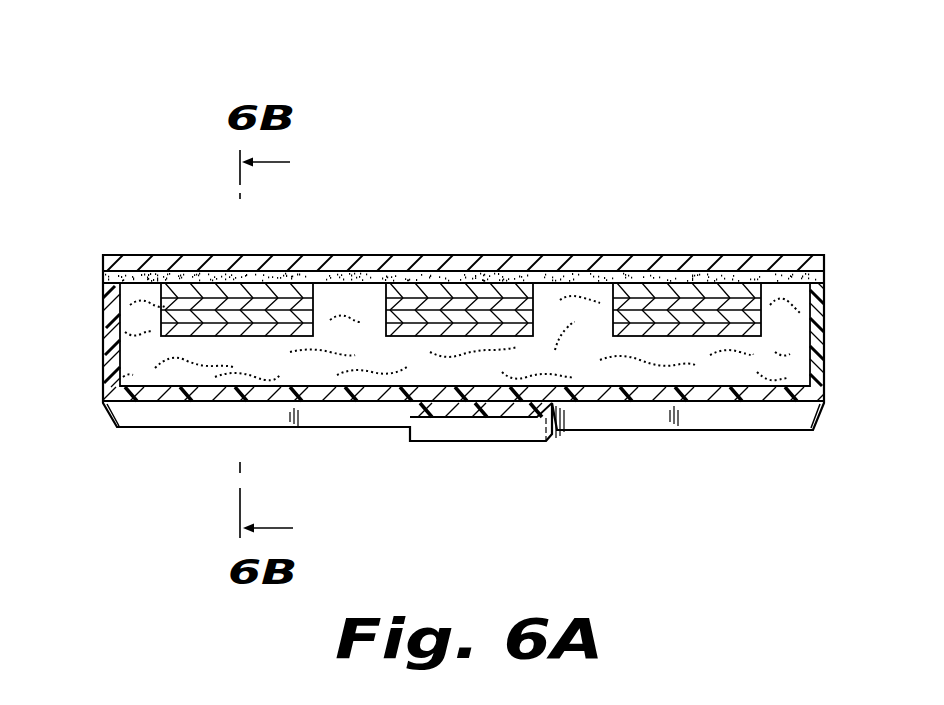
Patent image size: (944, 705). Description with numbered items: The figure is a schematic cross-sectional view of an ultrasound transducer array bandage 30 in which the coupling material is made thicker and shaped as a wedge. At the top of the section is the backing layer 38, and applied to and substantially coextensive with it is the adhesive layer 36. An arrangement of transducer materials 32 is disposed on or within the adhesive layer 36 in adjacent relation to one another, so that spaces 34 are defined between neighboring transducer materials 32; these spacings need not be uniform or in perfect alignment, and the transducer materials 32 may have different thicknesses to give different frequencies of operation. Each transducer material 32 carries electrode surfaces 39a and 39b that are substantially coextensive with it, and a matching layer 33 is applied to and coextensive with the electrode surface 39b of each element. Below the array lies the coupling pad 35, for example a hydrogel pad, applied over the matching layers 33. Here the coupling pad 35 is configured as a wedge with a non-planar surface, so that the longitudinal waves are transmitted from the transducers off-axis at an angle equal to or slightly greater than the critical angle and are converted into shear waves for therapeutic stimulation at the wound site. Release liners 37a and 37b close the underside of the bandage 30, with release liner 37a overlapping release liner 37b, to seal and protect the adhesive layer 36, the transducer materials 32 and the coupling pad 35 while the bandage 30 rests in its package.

The transducer array bandage 30 is at (126, 114).
The backing layer 38 is at (121, 262).
The adhesive layer 36 is at (108, 278).
The coupling pad 35 is at (143, 352).
The spaces 34 is at (553, 325).
The release liner 37b is at (139, 393).
The release liner 37a is at (800, 395).
The transducer materials 32 is at (662, 305).
The electrode surface 39a is at (625, 293).
The electrode surface 39b is at (705, 330).
The matching layer 33 is at (743, 333).